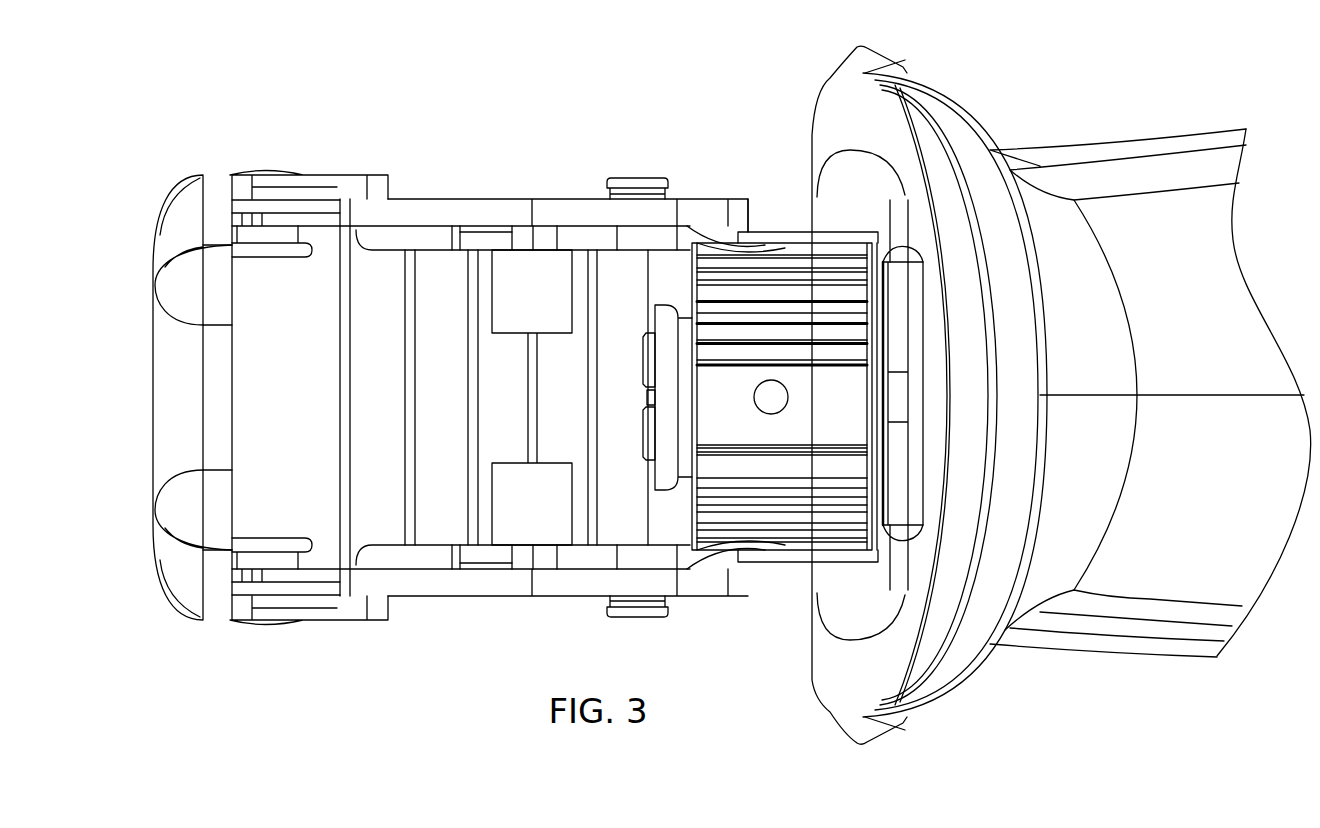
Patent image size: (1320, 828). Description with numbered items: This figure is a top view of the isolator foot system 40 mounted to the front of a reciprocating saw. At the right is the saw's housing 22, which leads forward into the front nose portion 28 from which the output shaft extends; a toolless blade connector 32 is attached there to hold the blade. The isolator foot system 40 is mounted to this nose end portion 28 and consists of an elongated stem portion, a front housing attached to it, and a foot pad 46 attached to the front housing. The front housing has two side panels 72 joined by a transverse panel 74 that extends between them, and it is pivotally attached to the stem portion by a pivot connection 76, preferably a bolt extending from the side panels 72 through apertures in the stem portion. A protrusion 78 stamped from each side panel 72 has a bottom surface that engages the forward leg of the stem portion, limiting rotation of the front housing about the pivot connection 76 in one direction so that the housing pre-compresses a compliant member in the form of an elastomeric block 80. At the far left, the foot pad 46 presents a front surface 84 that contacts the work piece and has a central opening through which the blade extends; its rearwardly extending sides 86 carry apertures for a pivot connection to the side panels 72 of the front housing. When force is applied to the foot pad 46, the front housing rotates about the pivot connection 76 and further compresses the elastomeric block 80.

The housing 22 is at (1208, 306).
The front nose portion 28 is at (942, 690).
The toolless blade connector 32 is at (787, 505).
The isolator foot system 40 is at (560, 137).
The foot pad 46 is at (186, 611).
The side panels 72 is at (437, 242).
The transverse panel 74 is at (352, 360).
The pivot connection 76 is at (619, 178).
The protrusion 78 is at (486, 240).
The elastomeric block 80 is at (614, 345).
The front surface 84 is at (150, 375).
The rearwardly extending sides 86 is at (335, 178).